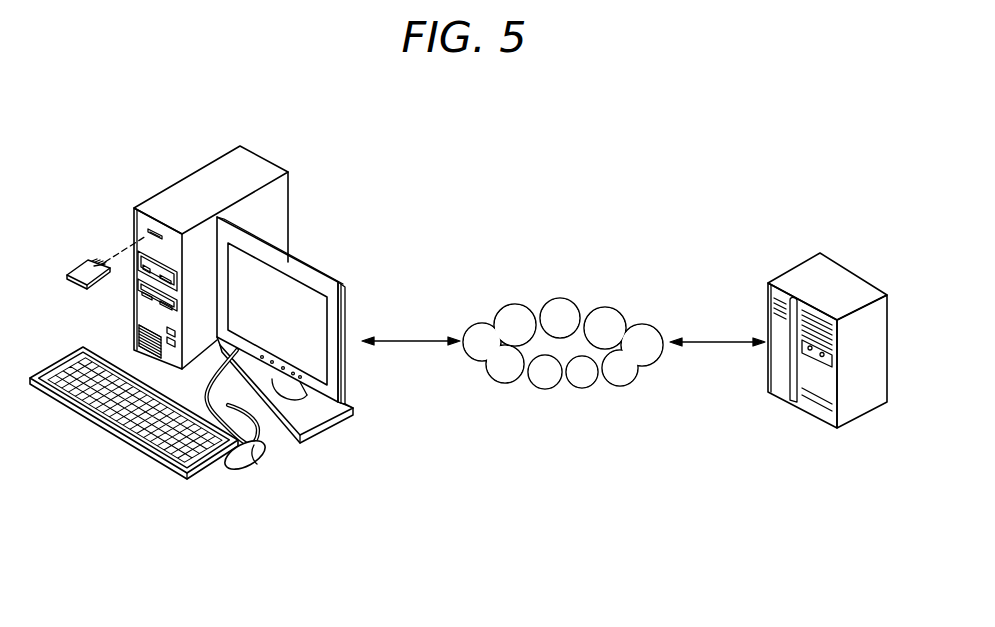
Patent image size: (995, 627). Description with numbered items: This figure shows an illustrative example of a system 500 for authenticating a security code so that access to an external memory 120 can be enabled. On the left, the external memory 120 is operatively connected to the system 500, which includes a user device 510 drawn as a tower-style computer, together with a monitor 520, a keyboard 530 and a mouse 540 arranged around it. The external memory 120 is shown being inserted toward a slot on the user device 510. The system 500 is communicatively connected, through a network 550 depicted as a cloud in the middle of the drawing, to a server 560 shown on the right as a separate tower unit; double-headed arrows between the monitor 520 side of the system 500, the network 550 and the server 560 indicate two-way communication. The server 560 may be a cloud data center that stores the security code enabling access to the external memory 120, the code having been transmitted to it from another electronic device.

The system 500 is at (118, 153).
The user device 510 is at (266, 157).
The external memory 120 is at (80, 263).
The monitor 520 is at (322, 268).
The keyboard 530 is at (107, 437).
The mouse 540 is at (237, 470).
The network 550 is at (598, 303).
The server 560 is at (853, 273).